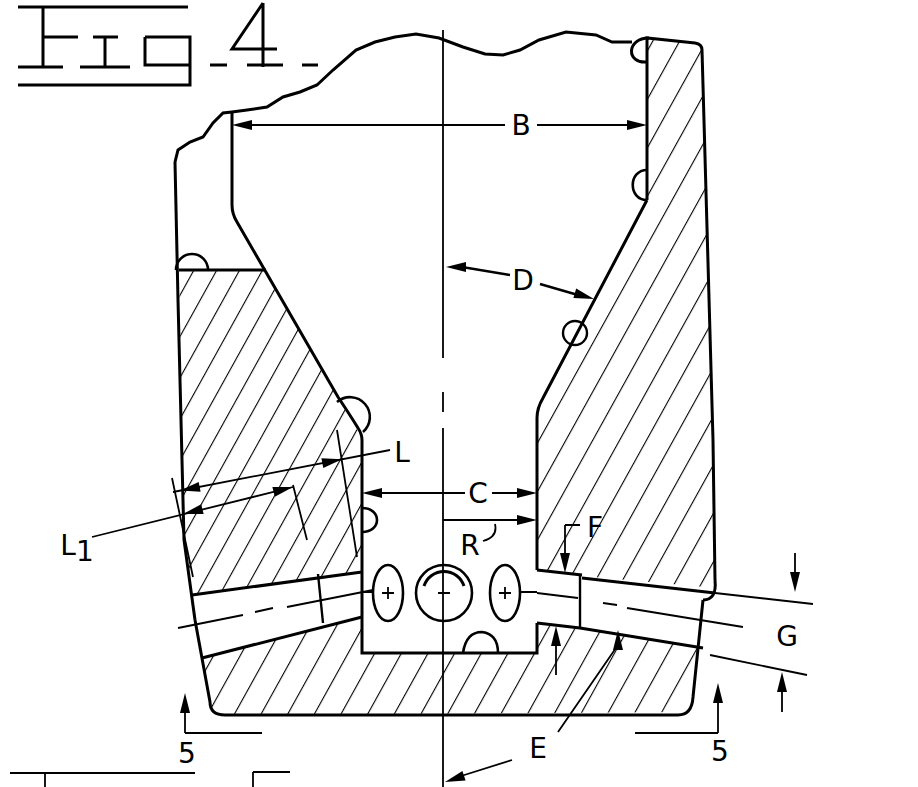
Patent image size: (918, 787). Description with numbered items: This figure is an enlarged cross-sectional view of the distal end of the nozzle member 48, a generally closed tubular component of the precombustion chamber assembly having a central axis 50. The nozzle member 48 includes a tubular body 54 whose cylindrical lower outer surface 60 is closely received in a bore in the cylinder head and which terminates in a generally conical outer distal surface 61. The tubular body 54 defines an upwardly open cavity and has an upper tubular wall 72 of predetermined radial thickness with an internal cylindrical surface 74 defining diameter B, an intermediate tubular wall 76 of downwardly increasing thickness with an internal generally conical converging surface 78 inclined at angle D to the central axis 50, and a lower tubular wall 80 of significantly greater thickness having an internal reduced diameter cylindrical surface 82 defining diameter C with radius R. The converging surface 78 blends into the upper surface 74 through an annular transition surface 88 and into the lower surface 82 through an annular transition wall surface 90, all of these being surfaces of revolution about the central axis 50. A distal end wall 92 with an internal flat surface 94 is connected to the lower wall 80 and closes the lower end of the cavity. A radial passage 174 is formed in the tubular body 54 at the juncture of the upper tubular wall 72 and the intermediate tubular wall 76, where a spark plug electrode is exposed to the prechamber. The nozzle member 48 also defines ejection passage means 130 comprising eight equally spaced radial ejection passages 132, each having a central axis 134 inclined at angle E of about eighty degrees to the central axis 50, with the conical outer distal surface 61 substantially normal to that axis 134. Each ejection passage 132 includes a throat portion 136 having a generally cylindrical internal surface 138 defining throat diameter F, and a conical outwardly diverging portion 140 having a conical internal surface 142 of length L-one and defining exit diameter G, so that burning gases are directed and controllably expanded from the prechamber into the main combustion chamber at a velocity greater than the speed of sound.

The nozzle member 48 is at (712, 344).
The central axis 50 is at (442, 67).
The tubular body 54 is at (213, 383).
The cylindrical lower outer surface 60 is at (712, 215).
The conical outer distal surface 61 is at (697, 695).
The upper tubular wall 72 is at (678, 78).
The internal cylindrical surface 74 is at (633, 40).
The intermediate tubular wall 76 is at (667, 275).
The conical converging surface 78 is at (584, 340).
The lower tubular wall 80 is at (713, 427).
The internal reduced diameter cylindrical surface 82 is at (360, 508).
The annular transition surface 88 is at (648, 170).
The annular transition wall surface 90 is at (337, 410).
The distal end wall 92 is at (376, 683).
The internal flat surface 94 is at (492, 655).
The ejection passage means 130 is at (212, 590).
The ejection passage 132 is at (712, 532).
The central axis 134 is at (217, 623).
The throat portion 136 is at (347, 627).
The cylindrical internal surface 138 is at (340, 577).
The conical outwardly diverging portion 140 is at (710, 673).
The conical internal surface 142 is at (720, 590).
The radial passage 174 is at (176, 258).